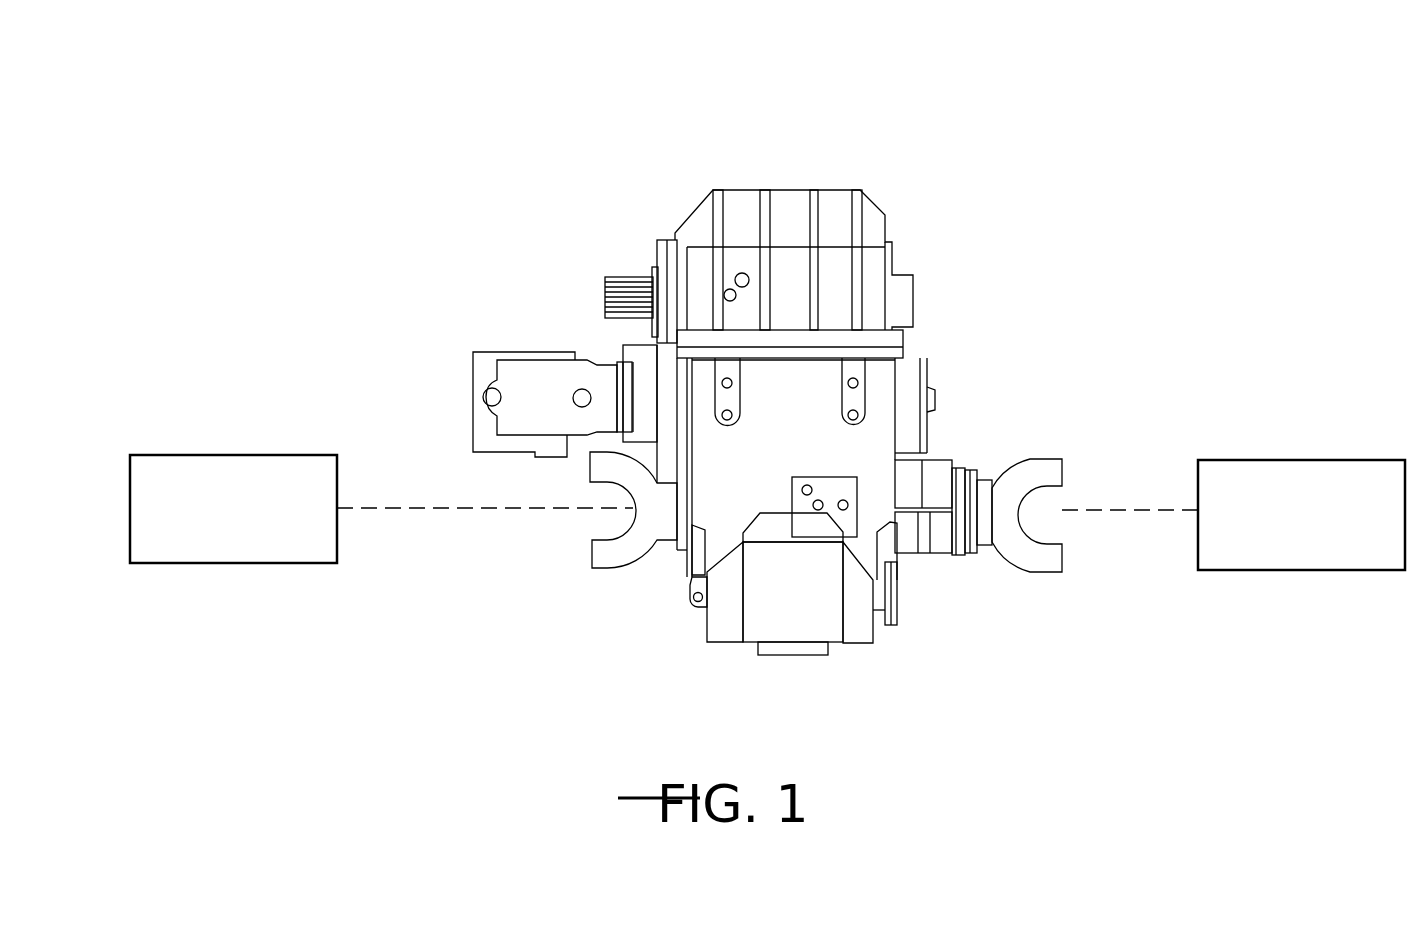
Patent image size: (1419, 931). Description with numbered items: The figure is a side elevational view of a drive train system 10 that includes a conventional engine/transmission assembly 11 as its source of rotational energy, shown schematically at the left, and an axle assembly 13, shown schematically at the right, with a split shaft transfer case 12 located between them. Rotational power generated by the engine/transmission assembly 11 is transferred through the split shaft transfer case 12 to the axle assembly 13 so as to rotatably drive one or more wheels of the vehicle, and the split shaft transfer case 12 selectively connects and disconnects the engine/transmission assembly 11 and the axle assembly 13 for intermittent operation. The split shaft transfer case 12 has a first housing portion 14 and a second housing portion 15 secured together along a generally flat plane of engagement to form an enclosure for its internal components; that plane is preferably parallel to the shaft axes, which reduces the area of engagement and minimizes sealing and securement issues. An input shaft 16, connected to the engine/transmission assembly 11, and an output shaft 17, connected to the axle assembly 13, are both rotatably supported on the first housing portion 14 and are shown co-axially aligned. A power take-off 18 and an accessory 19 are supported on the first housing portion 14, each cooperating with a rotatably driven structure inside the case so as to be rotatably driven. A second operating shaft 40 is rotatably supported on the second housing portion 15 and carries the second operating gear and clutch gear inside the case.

The drive train system 10 is at (1019, 132).
The engine/transmission assembly 11 is at (312, 457).
The split shaft transfer case 12 is at (608, 195).
The axle assembly 13 is at (1338, 458).
The first housing portion 14 is at (870, 507).
The second housing portion 15 is at (835, 227).
The input shaft 16 is at (667, 548).
The output shaft 17 is at (989, 480).
The power take-off 18 is at (793, 608).
The accessory 19 is at (542, 385).
The second operating shaft 40 is at (625, 290).